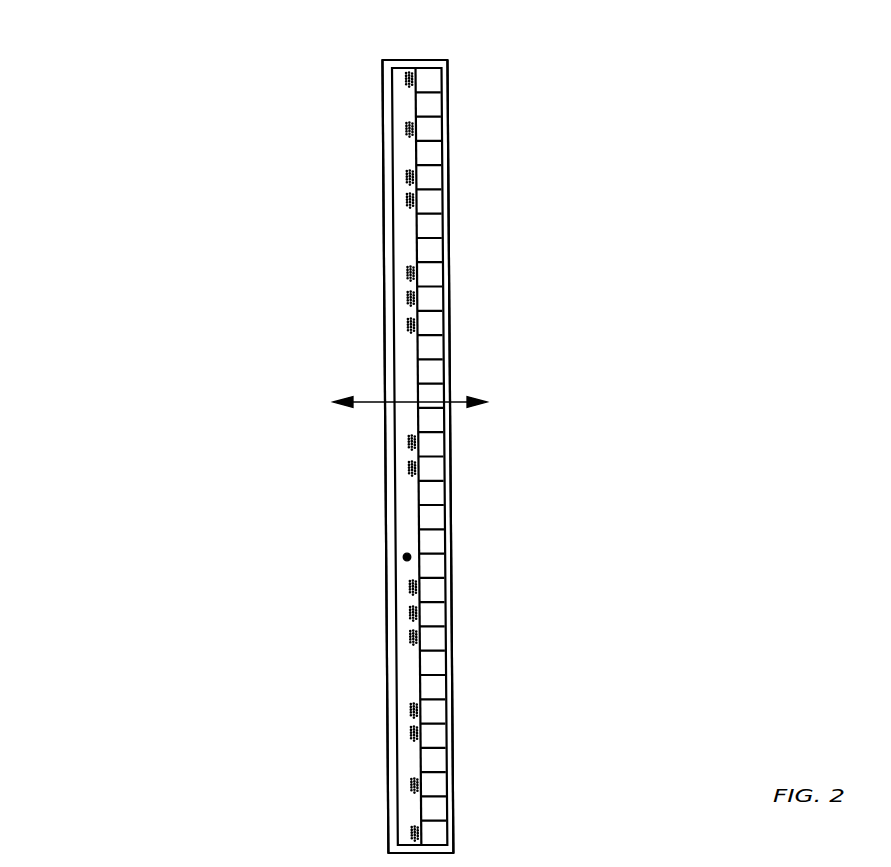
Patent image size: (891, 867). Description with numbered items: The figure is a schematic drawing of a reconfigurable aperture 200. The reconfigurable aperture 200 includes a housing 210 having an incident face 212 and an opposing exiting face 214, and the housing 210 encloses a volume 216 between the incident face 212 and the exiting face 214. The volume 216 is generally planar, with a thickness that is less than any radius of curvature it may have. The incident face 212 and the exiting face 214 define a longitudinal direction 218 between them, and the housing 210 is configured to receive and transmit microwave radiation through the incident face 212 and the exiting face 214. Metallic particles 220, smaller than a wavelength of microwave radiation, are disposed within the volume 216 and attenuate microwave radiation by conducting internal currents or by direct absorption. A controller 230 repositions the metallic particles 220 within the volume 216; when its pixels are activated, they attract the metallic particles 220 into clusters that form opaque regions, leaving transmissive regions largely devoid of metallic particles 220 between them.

The reconfigurable aperture 200 is at (200, 155).
The housing 210 is at (415, 60).
The incident face 212 is at (387, 750).
The exiting face 214 is at (453, 735).
The volume 216 is at (404, 557).
The longitudinal direction 218 is at (363, 403).
The metallic particles 220 is at (410, 198).
The controller 230 is at (432, 202).